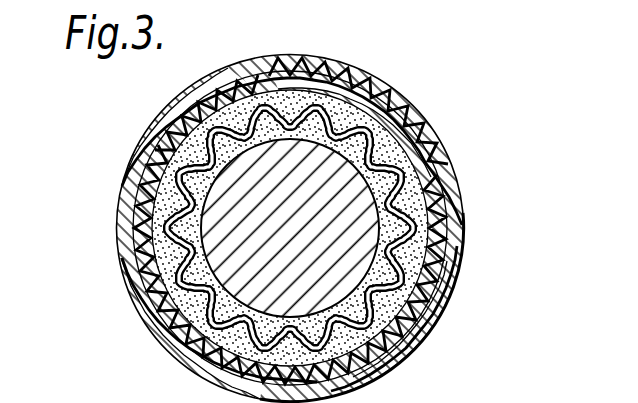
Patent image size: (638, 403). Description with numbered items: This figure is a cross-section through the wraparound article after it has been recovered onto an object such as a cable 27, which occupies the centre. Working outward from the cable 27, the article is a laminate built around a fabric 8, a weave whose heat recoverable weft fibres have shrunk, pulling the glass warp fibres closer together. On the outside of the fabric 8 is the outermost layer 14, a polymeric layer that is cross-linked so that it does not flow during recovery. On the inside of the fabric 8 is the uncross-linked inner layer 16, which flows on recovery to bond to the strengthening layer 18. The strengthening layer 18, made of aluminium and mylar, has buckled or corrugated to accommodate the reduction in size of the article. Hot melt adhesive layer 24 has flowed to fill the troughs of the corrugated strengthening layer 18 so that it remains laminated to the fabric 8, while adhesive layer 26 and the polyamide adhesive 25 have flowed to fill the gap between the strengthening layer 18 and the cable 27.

The fabric 8 is at (413, 150).
The outermost layer 14 is at (388, 95).
The strengthening layer 18 is at (405, 174).
The inner layer 16 is at (341, 228).
The adhesive layer 24 is at (413, 248).
The polyamide adhesive 25 is at (220, 228).
The adhesive layer 26 is at (190, 236).
The cable 27 is at (337, 273).